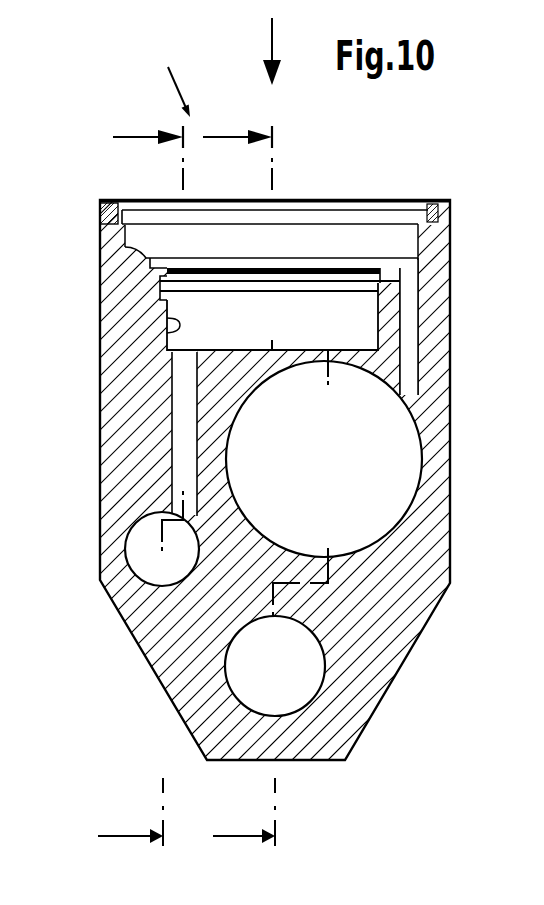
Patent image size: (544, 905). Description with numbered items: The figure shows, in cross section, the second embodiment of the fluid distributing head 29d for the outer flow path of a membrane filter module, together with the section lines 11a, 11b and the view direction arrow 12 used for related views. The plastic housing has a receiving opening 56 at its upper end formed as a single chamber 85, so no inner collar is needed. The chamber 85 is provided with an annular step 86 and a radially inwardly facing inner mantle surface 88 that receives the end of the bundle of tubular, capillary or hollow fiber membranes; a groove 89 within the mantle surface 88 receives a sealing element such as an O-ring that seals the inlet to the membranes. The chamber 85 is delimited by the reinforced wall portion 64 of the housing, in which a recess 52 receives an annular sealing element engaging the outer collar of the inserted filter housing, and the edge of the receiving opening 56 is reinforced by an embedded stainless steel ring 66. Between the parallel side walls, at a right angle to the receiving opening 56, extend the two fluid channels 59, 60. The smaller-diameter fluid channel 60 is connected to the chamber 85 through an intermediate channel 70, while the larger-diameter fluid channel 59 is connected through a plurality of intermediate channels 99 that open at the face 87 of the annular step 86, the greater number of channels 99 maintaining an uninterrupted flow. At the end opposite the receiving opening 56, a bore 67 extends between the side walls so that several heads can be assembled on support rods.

The section line for FIG. 12 is at (282, 51).
The fluid distributing head 29d is at (166, 77).
The section line 11a is at (140, 490).
The section line 11b is at (265, 490).
The recess 52 is at (407, 204).
The receiving opening 56 is at (328, 232).
The fluid channel 59 is at (390, 469).
The fluid channel 60 is at (132, 532).
The wall portion 64 is at (436, 242).
The stainless steel ring 66 is at (112, 200).
The bore 67 is at (303, 690).
The intermediate channel 70 is at (176, 455).
The single chamber 85 is at (281, 303).
The annular step 86 is at (170, 262).
The face of the annular step 87 is at (130, 251).
The inner mantle surface 88 is at (176, 327).
The groove 89 is at (383, 288).
The intermediate channels 99 is at (405, 366).